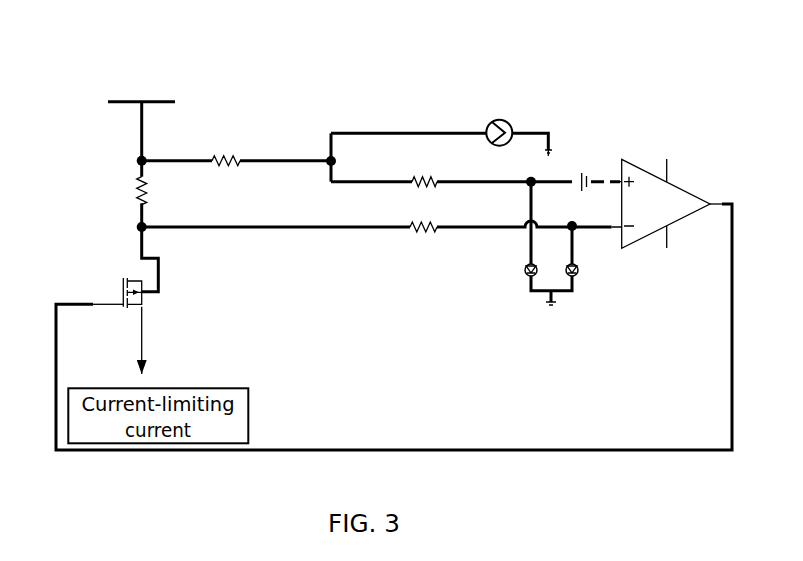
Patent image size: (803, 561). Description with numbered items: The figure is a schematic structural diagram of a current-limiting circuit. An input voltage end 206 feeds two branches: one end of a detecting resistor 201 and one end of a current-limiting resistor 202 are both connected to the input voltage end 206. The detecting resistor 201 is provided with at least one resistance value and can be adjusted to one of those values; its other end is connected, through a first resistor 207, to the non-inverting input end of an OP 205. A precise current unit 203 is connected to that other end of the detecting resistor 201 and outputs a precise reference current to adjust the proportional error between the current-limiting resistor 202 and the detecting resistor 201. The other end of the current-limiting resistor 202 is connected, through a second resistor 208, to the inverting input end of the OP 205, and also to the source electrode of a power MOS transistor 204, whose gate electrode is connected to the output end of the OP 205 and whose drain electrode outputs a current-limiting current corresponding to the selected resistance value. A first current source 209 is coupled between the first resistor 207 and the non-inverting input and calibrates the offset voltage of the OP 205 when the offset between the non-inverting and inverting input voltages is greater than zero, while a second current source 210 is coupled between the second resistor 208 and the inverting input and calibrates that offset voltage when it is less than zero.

The detecting resistor 201 is at (227, 149).
The current-limiting resistor 202 is at (154, 197).
The precise current unit 203 is at (505, 114).
The power MOS transistor 204 is at (162, 287).
The OP 205 is at (633, 156).
The input voltage end 206 is at (144, 98).
The first resistor 207 is at (416, 168).
The second resistor 208 is at (415, 237).
The first current source 209 is at (524, 278).
The second current source 210 is at (580, 278).